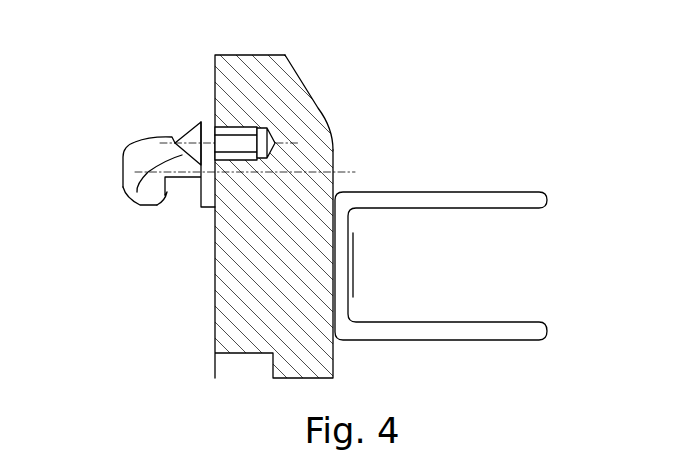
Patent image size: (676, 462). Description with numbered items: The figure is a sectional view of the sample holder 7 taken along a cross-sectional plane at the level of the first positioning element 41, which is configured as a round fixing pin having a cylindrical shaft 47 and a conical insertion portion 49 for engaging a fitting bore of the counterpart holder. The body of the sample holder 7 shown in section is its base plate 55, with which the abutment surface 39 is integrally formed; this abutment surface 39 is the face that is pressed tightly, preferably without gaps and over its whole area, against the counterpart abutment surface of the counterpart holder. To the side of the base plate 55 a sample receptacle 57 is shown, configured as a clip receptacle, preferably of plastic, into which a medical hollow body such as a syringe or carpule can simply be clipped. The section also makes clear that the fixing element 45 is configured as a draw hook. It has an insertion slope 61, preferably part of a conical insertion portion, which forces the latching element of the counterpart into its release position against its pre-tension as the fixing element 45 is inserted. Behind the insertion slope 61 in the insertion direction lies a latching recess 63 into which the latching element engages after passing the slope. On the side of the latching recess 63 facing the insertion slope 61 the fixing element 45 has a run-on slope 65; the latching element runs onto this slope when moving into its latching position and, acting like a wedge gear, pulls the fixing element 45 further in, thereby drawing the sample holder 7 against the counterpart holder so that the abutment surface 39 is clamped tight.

The sample holder 7 is at (140, 67).
The abutment surface 39 is at (215, 75).
The first positioning element 41 is at (186, 126).
The fixing element 45 is at (119, 160).
The cylindrical shaft 47 is at (200, 118).
The conical insertion portion 49 is at (178, 153).
The base plate 55 is at (297, 128).
The sample receptacle 57 is at (423, 199).
The insertion slope 61 is at (143, 198).
The latching recess 63 is at (185, 197).
The run-on slope 65 is at (168, 198).